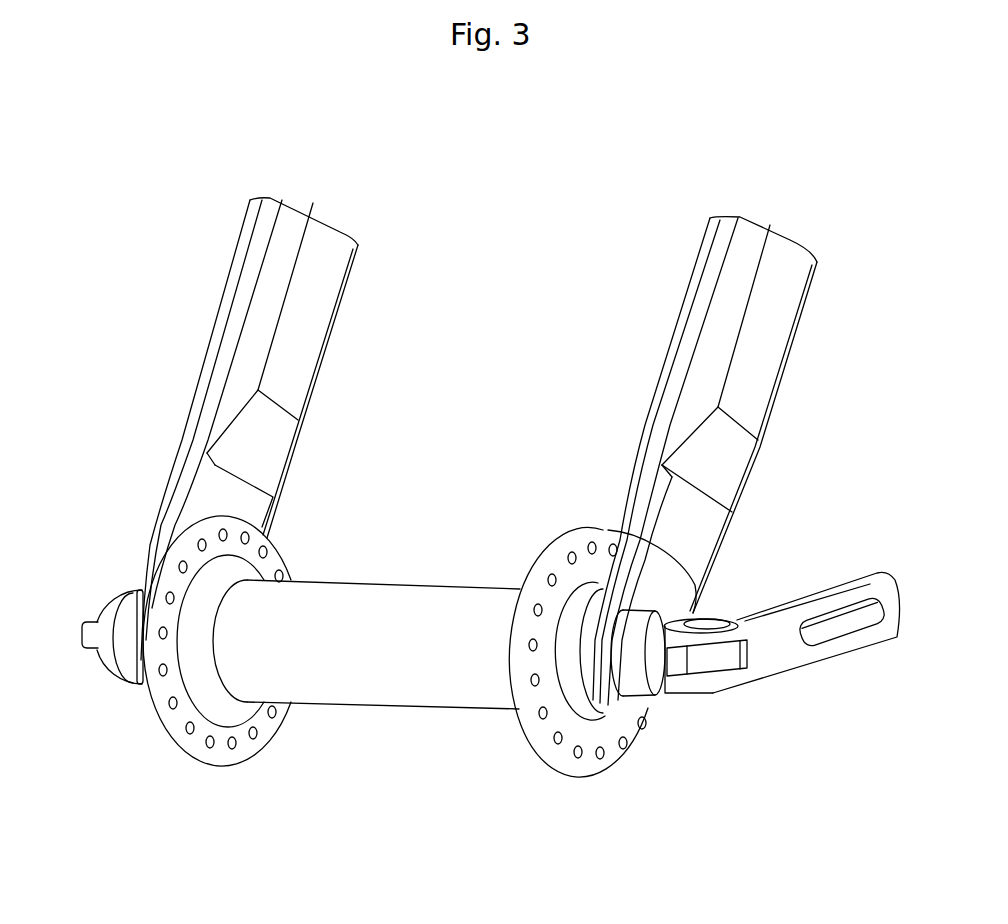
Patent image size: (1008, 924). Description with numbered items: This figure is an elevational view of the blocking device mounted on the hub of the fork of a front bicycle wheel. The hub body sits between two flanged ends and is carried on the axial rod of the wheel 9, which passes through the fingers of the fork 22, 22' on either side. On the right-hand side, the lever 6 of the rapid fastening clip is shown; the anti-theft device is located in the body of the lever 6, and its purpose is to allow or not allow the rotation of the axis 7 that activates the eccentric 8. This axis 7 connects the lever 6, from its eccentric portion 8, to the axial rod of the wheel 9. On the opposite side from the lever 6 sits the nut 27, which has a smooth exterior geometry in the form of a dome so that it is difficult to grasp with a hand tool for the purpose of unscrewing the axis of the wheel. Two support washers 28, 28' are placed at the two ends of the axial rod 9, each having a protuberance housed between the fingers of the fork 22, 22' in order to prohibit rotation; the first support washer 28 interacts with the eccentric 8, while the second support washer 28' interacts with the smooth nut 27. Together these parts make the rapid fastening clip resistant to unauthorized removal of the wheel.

The lever 6 is at (778, 657).
The axis 7 is at (714, 623).
The eccentric 8 is at (680, 652).
The axial rod of the wheel 9 is at (88, 640).
The finger of the fork 22 is at (742, 461).
The finger of the fork 22' is at (247, 429).
The nut 27 is at (108, 623).
The support washer 28 is at (575, 745).
The support washer 28' is at (175, 737).